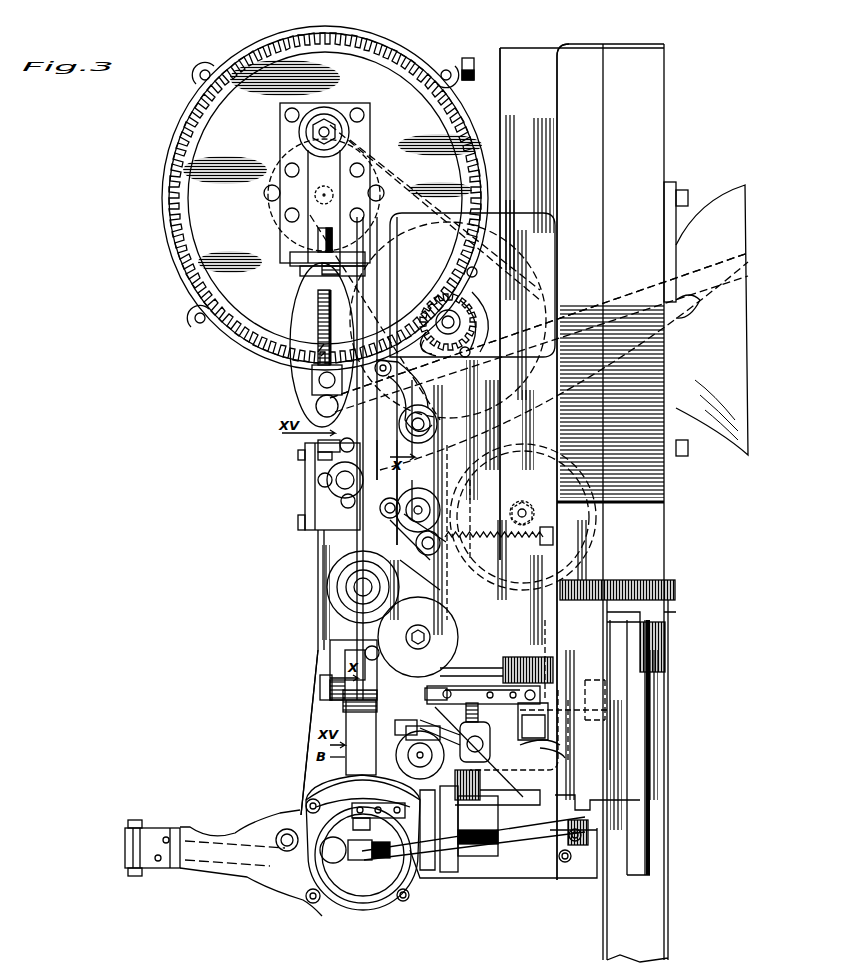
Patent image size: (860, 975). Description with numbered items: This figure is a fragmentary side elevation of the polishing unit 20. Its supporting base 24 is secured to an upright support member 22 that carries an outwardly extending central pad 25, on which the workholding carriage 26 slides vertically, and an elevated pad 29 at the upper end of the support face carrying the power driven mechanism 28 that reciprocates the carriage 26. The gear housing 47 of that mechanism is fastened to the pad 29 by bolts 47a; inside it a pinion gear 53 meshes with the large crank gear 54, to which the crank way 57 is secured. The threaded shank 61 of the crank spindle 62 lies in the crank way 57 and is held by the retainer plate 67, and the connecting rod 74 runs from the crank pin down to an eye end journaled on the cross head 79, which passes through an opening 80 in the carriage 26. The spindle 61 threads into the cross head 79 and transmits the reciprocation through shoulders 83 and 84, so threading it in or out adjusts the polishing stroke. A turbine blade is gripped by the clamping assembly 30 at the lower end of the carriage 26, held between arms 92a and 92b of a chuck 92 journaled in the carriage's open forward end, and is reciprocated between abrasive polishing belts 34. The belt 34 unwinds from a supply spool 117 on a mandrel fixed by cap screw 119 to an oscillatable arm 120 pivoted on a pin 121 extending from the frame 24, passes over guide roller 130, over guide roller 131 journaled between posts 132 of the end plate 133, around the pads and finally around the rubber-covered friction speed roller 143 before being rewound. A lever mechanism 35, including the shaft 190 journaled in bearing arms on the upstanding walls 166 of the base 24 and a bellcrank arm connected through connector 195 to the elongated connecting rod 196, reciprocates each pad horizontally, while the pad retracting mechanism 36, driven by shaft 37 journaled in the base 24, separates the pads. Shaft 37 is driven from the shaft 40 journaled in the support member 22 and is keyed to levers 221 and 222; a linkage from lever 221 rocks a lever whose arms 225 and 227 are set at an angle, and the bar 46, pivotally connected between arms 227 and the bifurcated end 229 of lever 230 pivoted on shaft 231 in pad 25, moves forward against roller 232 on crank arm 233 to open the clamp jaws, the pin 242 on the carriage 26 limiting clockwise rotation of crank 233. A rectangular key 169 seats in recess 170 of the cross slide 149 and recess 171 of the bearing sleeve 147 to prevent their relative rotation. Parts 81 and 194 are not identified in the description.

The polishing unit 20 is at (299, 491).
The upright support member 22 is at (660, 766).
The supporting base 24 is at (570, 54).
The central pad 25 is at (522, 491).
The workholding carriage 26 is at (313, 550).
The power driven mechanism 28 is at (350, 135).
The elevated pad 29 is at (516, 56).
The clamping assembly 30 is at (343, 708).
The abrasive polishing belts 34 is at (318, 722).
The lever mechanism 35 is at (410, 768).
The pad retracting mechanism 36 is at (485, 846).
The shaft 37 is at (666, 632).
The shaft 40 is at (652, 812).
The bar 46 is at (390, 492).
The gear housing 47 is at (290, 36).
The bolts 47a is at (466, 58).
The pinion gear 53 is at (438, 310).
The crank gear 54 is at (440, 175).
The crank way 57 is at (292, 132).
The threaded spindle 61 is at (318, 318).
The crank spindle 62 is at (318, 242).
The retainer plate 67 is at (300, 258).
The connecting rod 74 is at (336, 192).
The cross head 79 is at (300, 400).
The opening 80 is at (320, 352).
The nut 81 is at (315, 381).
The shoulder 83 is at (325, 264).
The shoulder 84 is at (332, 274).
The chuck 92 is at (342, 666).
The arm of chuck 92a is at (342, 706).
The arm of chuck 92b is at (400, 725).
The supply spool 117 is at (345, 592).
The cap screw 119 is at (340, 580).
The oscillatable arm 120 is at (382, 540).
The pin 121 is at (440, 513).
The guide post or roller 130 is at (290, 851).
The guide roller 131 is at (125, 846).
The posts 132 is at (152, 830).
The end plate 133 is at (256, 878).
The friction speed roller 143 is at (445, 662).
The bearing sleeve 147 is at (348, 888).
The cross slide 149 is at (306, 828).
The upstanding wall 166 is at (524, 776).
The key 169 is at (340, 802).
The recessed portion 170 is at (330, 818).
The recessed portion 171 is at (350, 806).
The shaft 190 is at (418, 745).
The link 194 is at (462, 736).
The connector 195 is at (488, 740).
The elongated connecting rod 196 is at (478, 716).
The lever 221 is at (568, 740).
The lever 222 is at (562, 750).
The arms 225 is at (430, 702).
The arms 227 is at (425, 604).
The bifurcated end 229 is at (424, 338).
The lever 230 is at (430, 396).
The shaft 231 is at (488, 418).
The roller 232 is at (318, 445).
The crank arm 233 is at (318, 456).
The pin 242 is at (320, 476).